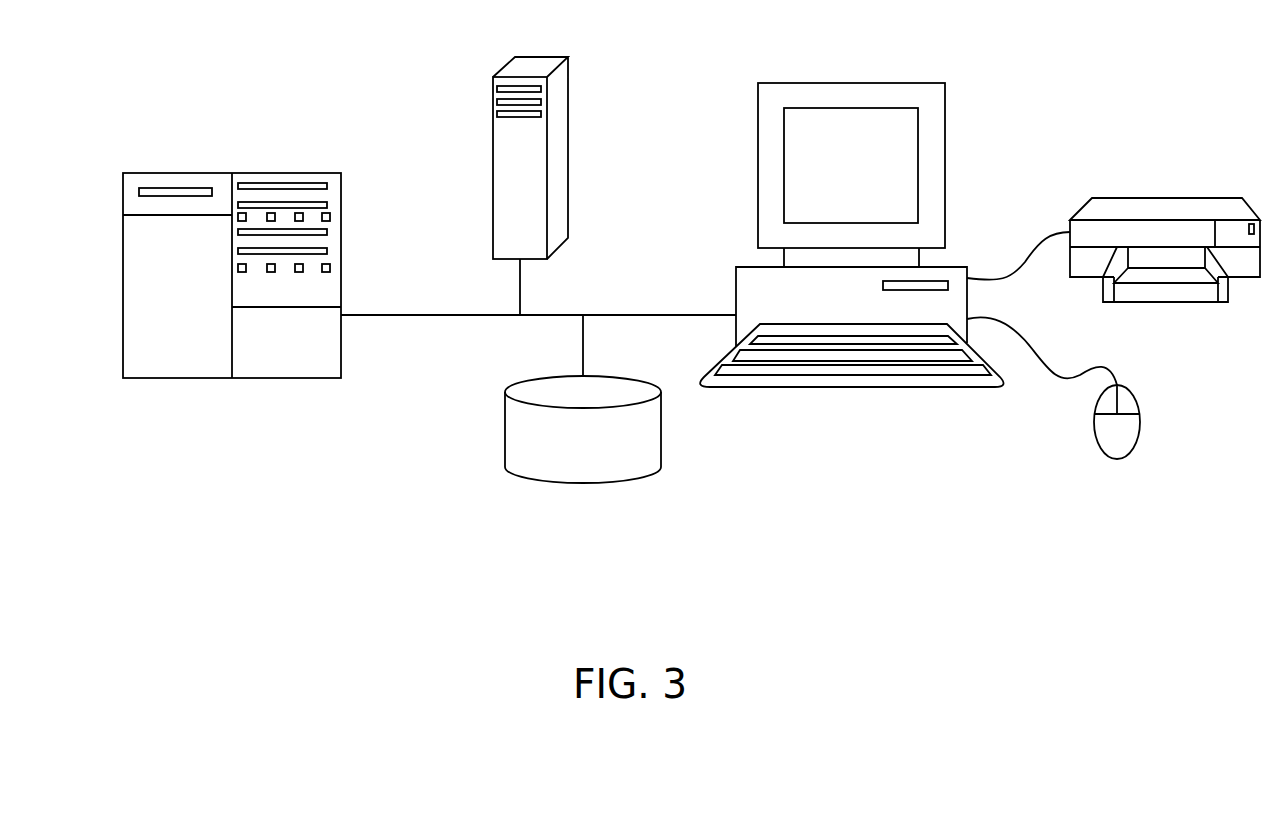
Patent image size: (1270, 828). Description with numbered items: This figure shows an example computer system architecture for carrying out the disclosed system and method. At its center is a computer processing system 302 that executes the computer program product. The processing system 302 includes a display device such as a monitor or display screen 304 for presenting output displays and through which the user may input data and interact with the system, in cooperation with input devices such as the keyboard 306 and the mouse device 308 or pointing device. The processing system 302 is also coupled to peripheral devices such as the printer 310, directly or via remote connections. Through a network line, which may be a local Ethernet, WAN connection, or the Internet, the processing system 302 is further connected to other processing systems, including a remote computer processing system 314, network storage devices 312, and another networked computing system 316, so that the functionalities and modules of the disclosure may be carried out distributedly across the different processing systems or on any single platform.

The processing system 302 is at (745, 289).
The display screen 304 is at (946, 163).
The keyboard 306 is at (895, 388).
The mouse device 308 is at (1139, 441).
The printer 310 is at (1176, 198).
The network storage devices 312 is at (607, 482).
The remote computer processing system 314 is at (602, 107).
The mainframe computer 316 is at (302, 173).